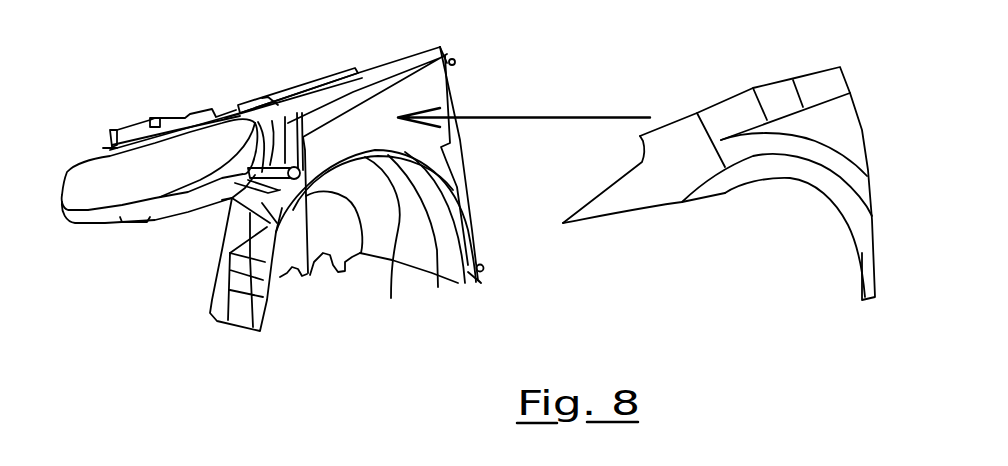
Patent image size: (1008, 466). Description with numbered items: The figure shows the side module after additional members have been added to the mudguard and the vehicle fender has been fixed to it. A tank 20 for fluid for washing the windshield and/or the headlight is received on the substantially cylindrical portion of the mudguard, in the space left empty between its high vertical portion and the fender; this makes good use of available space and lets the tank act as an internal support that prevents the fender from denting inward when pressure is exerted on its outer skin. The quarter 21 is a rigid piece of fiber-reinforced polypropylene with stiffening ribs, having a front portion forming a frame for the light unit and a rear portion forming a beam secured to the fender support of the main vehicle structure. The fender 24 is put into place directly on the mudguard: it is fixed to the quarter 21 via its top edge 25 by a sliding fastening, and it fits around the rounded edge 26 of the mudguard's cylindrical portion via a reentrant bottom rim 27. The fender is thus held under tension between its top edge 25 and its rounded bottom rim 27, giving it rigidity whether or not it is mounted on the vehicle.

The tank 20 is at (373, 128).
The quarter 21 is at (322, 90).
The fender 24 is at (827, 122).
The top edge 25 is at (727, 97).
The rounded edge 26 is at (391, 272).
The bottom rim 27 is at (817, 190).